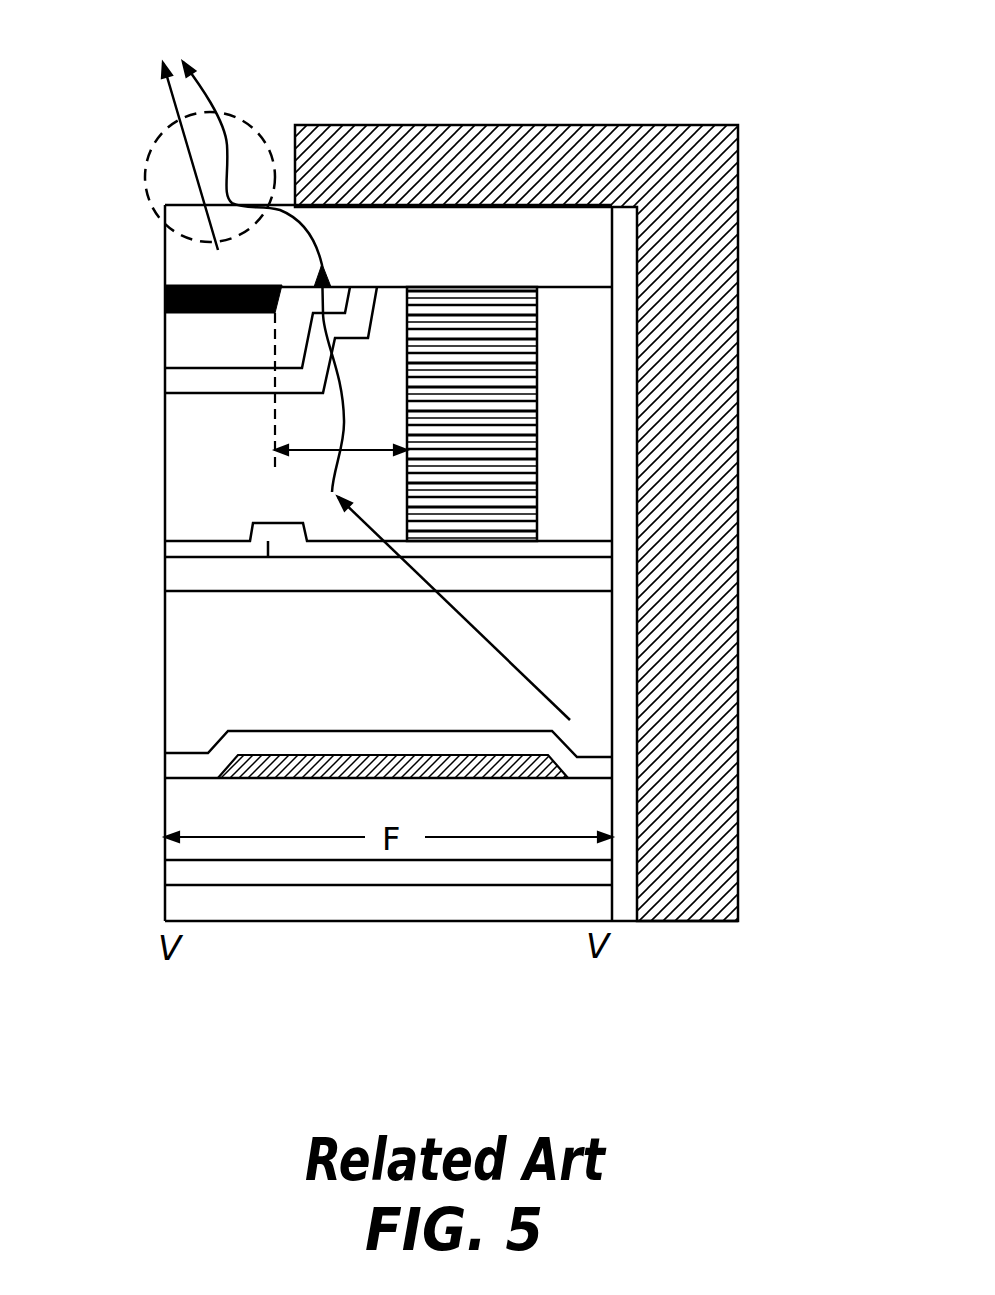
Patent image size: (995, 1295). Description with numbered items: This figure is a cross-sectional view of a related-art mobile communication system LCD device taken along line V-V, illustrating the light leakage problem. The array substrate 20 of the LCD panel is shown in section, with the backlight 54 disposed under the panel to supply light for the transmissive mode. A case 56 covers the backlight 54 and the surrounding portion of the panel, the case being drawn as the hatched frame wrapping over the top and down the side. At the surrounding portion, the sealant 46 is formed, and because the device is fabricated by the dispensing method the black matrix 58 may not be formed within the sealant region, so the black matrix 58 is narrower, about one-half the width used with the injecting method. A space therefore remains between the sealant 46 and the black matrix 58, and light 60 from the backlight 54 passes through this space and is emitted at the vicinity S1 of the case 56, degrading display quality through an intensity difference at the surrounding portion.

The case 56 is at (715, 282).
The sealant 46 is at (537, 423).
The black matrix 58 is at (322, 265).
The light 60 is at (222, 93).
The backlight 54 is at (302, 902).
The array substrate 20 is at (409, 812).
The vicinity of the case S1 is at (143, 160).